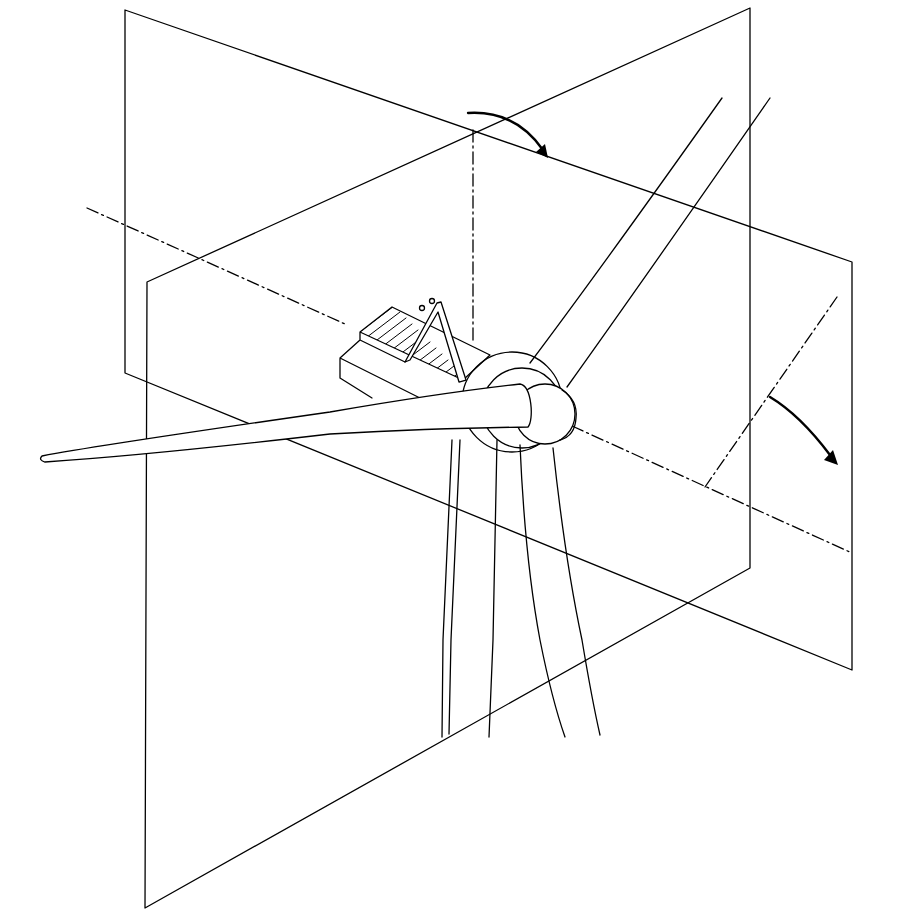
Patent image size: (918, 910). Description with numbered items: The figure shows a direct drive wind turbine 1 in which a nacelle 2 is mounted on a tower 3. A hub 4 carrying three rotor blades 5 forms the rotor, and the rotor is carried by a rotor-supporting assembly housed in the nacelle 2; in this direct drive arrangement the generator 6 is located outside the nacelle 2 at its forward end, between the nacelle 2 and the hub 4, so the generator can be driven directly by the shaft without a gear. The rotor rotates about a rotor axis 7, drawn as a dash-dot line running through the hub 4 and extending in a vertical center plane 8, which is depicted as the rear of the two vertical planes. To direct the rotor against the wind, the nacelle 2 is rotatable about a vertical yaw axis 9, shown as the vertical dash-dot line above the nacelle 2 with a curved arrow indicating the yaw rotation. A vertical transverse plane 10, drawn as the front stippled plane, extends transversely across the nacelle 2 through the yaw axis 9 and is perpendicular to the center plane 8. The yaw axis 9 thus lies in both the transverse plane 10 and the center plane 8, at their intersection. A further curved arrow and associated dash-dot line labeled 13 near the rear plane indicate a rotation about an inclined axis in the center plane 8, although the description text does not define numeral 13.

The wind turbine 1 is at (82, 158).
The nacelle 2 is at (338, 370).
The tower 3 is at (460, 715).
The hub 4 is at (567, 405).
The rotor blade 5 is at (588, 730).
The generator 6 is at (508, 354).
The rotor axis 7 is at (777, 518).
The vertical center plane 8 is at (840, 653).
The yaw axis 9 is at (473, 198).
The vertical transverse plane 10 is at (162, 864).
The tilt rotation 13 is at (803, 420).